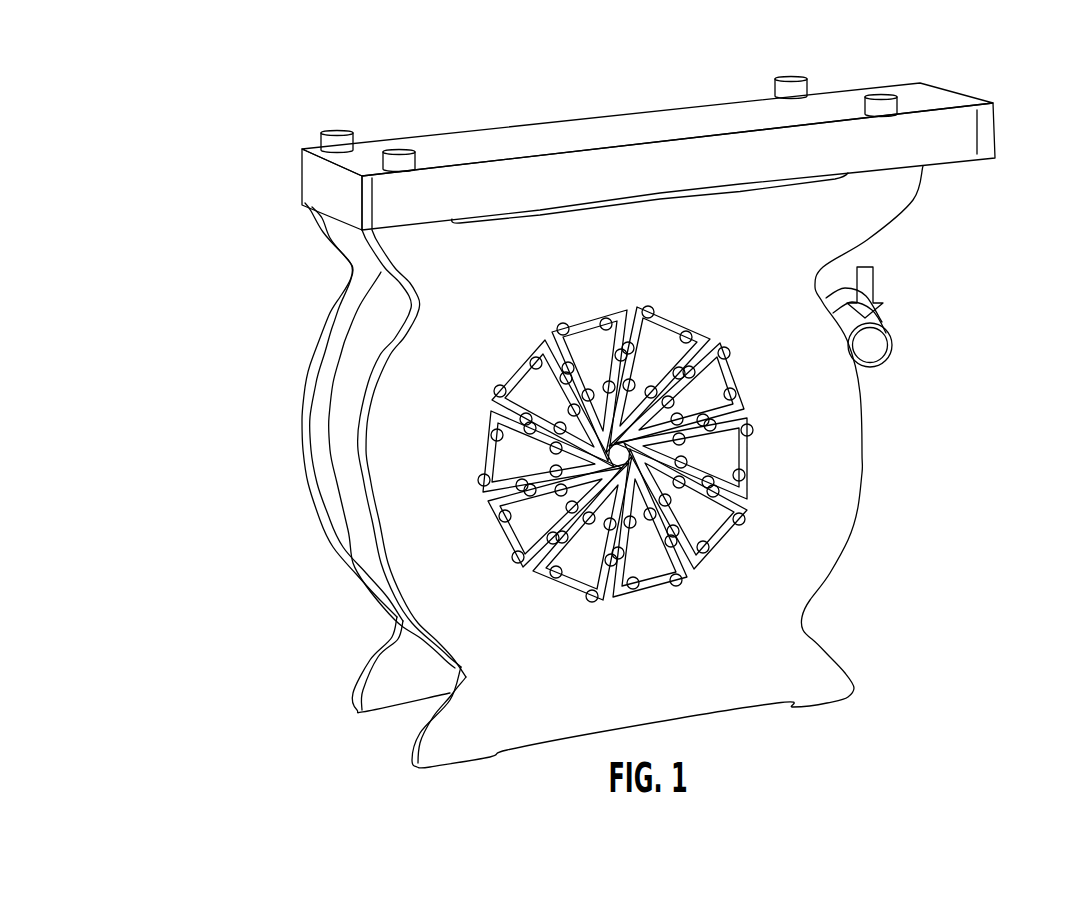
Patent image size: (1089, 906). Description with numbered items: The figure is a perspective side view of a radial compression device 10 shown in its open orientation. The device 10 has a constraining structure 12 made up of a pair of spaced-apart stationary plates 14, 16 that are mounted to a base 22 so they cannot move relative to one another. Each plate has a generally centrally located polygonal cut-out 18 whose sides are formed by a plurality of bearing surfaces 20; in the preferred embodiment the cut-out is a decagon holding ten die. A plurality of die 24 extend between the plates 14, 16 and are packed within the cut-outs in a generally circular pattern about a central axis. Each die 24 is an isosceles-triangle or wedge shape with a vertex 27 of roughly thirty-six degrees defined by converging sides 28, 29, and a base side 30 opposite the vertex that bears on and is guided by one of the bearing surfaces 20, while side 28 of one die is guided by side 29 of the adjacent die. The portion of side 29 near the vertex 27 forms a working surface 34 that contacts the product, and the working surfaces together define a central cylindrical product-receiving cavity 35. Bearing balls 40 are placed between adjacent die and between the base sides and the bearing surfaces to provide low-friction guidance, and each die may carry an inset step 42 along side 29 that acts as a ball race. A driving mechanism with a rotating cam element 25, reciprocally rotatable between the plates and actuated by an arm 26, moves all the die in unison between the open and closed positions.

The radial compression device 10 is at (1032, 318).
The constraining structure 12 is at (975, 160).
The stationary plate 14 is at (387, 493).
The stationary plate 16 is at (310, 413).
The cut-out 18 is at (487, 450).
The bearing surfaces 20 is at (512, 543).
The base 22 is at (932, 110).
The die 24 is at (624, 456).
The rotating cam element 25 is at (365, 335).
The arm 26 is at (873, 345).
The vertex 27 is at (640, 470).
The side 28 is at (667, 330).
The side 29 is at (653, 400).
The base side 30 is at (645, 333).
The working surface 34 is at (640, 445).
The product-receiving cavity 35 is at (645, 452).
The bearing balls 40 is at (597, 597).
The inset step 42 is at (528, 440).